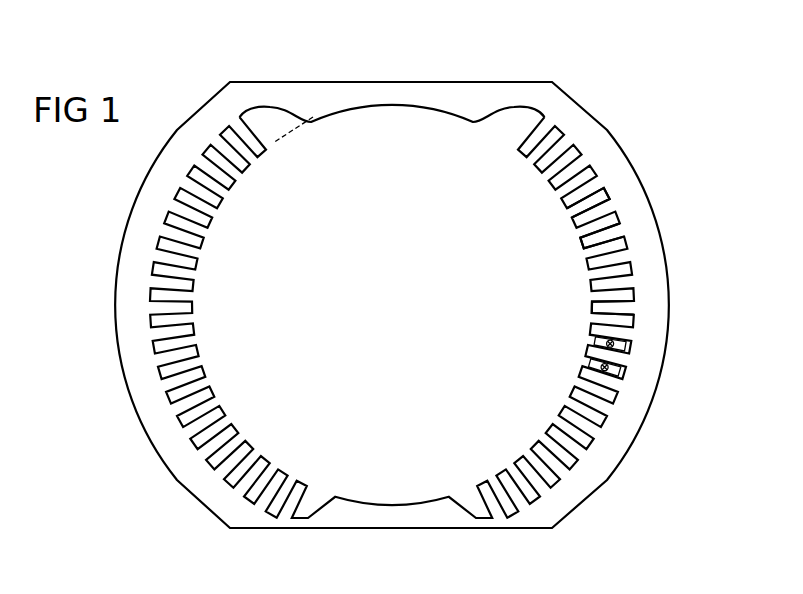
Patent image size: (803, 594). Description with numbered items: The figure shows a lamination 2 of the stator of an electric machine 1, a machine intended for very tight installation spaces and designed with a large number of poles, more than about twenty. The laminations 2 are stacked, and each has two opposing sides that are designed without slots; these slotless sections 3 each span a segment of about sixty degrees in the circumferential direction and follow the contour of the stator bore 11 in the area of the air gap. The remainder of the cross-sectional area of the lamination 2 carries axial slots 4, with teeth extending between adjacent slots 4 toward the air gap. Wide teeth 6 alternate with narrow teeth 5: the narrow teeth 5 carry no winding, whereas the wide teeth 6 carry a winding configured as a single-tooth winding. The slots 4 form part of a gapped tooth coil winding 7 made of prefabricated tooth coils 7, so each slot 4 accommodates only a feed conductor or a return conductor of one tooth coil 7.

The electric machine 1 is at (300, 82).
The lamination 2 is at (592, 128).
The slotless section 3 is at (411, 93).
The slot 4 is at (612, 191).
The narrow tooth 5 is at (618, 230).
The wide tooth 6 is at (610, 310).
The tooth coil winding 7 is at (627, 377).
The stator bore 11 is at (293, 131).